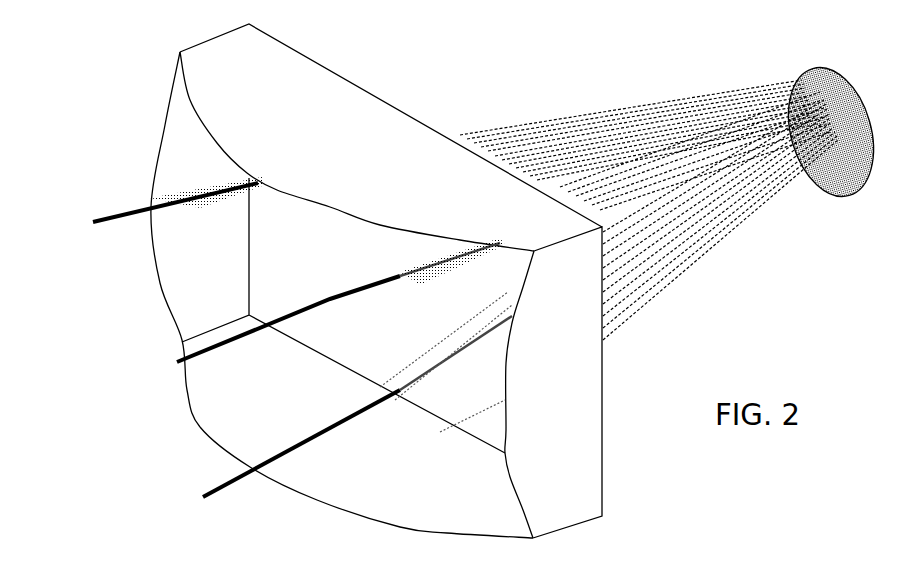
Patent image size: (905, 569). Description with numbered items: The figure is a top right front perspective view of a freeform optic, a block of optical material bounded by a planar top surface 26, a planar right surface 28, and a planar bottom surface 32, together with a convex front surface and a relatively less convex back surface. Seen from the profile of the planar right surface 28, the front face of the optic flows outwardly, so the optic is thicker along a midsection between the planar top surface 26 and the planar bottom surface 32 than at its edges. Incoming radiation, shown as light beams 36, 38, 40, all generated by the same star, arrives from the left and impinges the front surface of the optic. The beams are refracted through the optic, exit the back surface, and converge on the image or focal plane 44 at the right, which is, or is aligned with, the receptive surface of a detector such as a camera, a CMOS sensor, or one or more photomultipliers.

The planar top surface 26 is at (310, 70).
The planar right surface 28 is at (580, 478).
The planar bottom surface 32 is at (450, 535).
The light beam 36 is at (107, 213).
The light beam 38 is at (200, 352).
The light beam 40 is at (222, 493).
The image or focal plane 44 is at (830, 175).